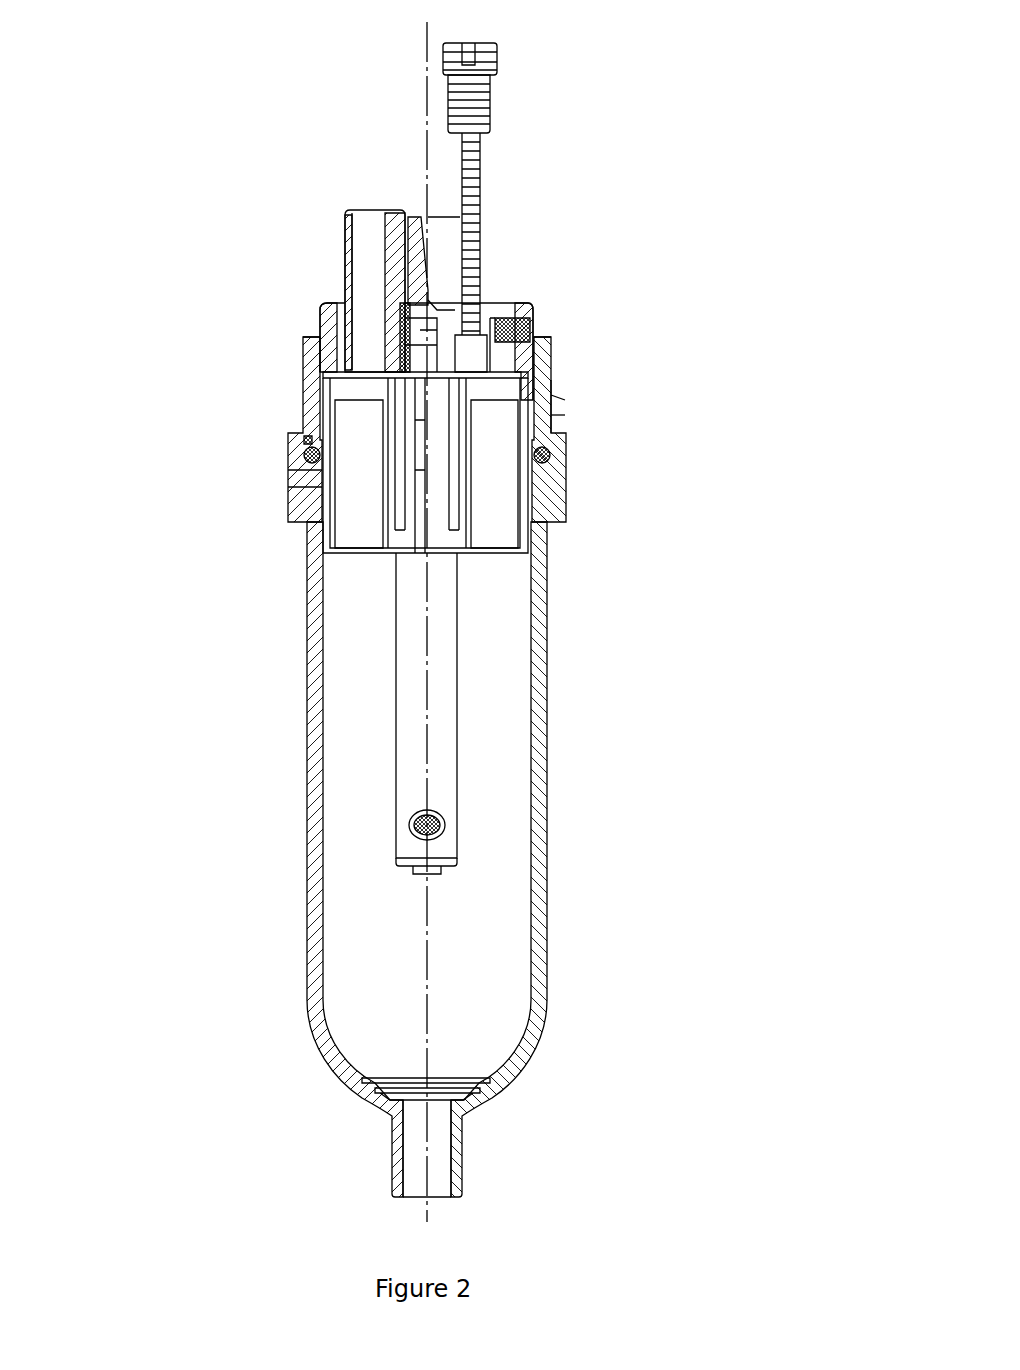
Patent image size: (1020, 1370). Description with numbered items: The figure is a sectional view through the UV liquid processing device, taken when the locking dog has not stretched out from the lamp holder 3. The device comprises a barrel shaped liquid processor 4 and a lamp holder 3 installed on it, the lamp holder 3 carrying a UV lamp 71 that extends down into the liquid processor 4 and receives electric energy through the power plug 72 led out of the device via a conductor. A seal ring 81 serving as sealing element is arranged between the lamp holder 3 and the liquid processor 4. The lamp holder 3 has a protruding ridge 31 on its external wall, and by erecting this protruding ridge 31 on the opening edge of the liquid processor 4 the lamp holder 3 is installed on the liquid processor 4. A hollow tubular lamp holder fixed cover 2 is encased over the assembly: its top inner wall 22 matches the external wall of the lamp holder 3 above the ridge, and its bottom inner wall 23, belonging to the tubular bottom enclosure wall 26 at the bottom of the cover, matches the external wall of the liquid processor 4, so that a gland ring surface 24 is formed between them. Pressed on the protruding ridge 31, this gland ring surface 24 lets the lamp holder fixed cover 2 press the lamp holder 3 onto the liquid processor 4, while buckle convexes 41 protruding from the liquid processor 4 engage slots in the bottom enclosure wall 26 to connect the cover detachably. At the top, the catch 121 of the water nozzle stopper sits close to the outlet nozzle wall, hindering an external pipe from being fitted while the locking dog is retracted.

The power plug 72 is at (468, 110).
The catch 121 is at (418, 217).
The lamp holder 3 is at (318, 316).
The lamp holder fixed cover 2 is at (292, 383).
The top inner wall 22 is at (552, 397).
The gland ring surface 24 is at (555, 415).
The protruding ridge 31 is at (306, 441).
The seal ring 81 is at (565, 455).
The bottom enclosure wall 26 is at (287, 468).
The bottom inner wall 23 is at (567, 470).
The buckle convex 41 is at (287, 487).
The liquid processor 4 is at (482, 777).
The UV lamp 71 is at (427, 699).